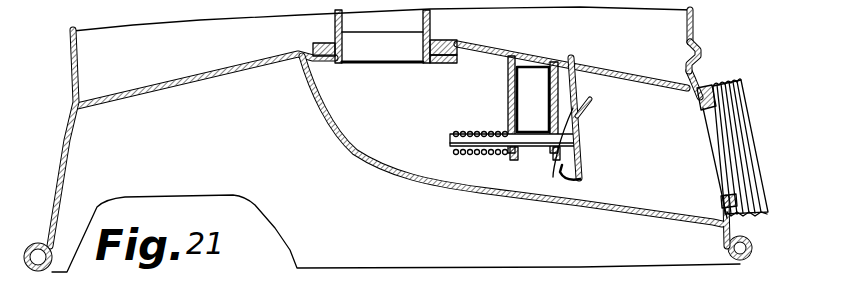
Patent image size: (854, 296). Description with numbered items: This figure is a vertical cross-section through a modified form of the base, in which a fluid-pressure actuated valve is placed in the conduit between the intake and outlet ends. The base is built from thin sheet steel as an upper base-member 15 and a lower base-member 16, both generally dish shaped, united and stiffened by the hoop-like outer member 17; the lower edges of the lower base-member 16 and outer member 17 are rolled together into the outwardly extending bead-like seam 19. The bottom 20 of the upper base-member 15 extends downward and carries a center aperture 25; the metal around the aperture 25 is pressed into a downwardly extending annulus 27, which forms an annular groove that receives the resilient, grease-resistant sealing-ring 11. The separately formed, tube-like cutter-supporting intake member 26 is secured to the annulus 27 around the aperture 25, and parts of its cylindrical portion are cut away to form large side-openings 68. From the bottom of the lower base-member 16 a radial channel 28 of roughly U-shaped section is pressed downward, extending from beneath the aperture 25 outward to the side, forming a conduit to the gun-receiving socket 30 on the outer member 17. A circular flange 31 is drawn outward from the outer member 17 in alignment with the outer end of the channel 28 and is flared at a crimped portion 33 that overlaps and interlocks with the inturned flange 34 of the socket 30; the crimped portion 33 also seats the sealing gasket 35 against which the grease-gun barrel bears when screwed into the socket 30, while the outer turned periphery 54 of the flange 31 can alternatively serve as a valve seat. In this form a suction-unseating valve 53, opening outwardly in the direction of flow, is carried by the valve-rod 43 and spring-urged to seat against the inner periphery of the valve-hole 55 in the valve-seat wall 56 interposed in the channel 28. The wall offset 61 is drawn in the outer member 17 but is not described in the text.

The packing-gasket or sealing-ring 11 is at (503, 35).
The upper base-member 15 is at (214, 55).
The lower base-member 16 is at (254, 143).
The outer member 17 is at (60, 150).
The rolled bead-like seam 19 is at (37, 238).
The bottom of the upper member 20 is at (563, 66).
The center aperture 25 is at (430, 60).
The cutter-supporting intake member 26 is at (334, 25).
The downwardly extending annulus 27 is at (445, 62).
The radial channel 28 is at (411, 129).
The gun-receiving socket 30 is at (743, 78).
The circular flange 31 is at (720, 194).
The crimped portion 33 is at (703, 83).
The inturned flange 34 is at (703, 104).
The sealing gasket 35 is at (724, 146).
The valve-rod 43 is at (537, 152).
The suction-unseating valve 53 is at (582, 154).
The outer turned periphery 54 is at (705, 135).
The valve-hole 55 is at (570, 162).
The valve-seat wall 56 is at (578, 84).
The wall offset 61 is at (687, 52).
The side-openings 68 is at (382, 35).